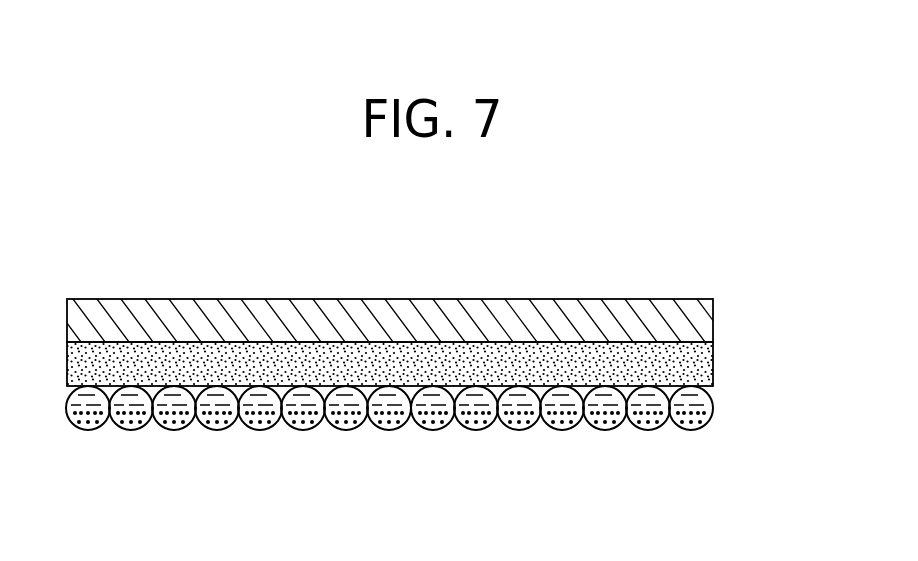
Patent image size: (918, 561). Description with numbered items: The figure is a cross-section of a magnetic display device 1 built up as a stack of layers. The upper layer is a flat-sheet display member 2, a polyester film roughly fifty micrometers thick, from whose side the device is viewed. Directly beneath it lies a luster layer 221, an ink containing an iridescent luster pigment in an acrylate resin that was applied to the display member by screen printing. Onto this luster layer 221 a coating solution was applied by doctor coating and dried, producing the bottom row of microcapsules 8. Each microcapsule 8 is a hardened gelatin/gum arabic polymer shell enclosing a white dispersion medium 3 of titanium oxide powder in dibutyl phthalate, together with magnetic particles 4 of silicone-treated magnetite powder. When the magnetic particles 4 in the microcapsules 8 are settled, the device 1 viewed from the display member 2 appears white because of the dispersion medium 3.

The magnetic display device 1 is at (405, 336).
The flat-sheet display member 2 is at (713, 313).
The luster layer 221 is at (713, 352).
The white dispersion medium 3 is at (512, 400).
The magnetic particles 4 is at (647, 416).
The microcapsules 8 is at (693, 426).